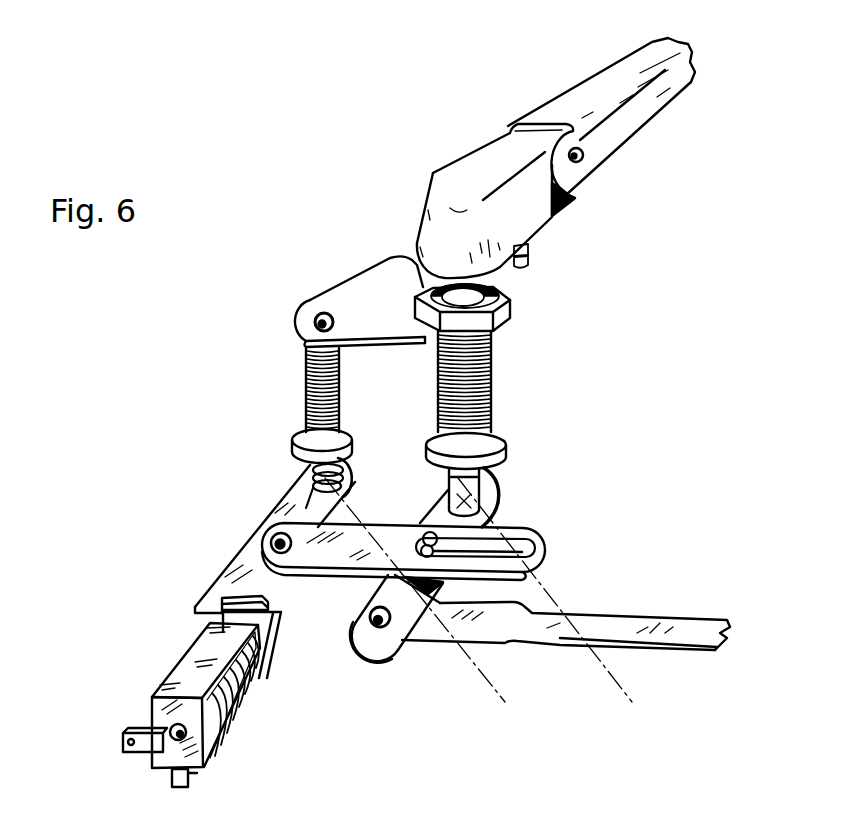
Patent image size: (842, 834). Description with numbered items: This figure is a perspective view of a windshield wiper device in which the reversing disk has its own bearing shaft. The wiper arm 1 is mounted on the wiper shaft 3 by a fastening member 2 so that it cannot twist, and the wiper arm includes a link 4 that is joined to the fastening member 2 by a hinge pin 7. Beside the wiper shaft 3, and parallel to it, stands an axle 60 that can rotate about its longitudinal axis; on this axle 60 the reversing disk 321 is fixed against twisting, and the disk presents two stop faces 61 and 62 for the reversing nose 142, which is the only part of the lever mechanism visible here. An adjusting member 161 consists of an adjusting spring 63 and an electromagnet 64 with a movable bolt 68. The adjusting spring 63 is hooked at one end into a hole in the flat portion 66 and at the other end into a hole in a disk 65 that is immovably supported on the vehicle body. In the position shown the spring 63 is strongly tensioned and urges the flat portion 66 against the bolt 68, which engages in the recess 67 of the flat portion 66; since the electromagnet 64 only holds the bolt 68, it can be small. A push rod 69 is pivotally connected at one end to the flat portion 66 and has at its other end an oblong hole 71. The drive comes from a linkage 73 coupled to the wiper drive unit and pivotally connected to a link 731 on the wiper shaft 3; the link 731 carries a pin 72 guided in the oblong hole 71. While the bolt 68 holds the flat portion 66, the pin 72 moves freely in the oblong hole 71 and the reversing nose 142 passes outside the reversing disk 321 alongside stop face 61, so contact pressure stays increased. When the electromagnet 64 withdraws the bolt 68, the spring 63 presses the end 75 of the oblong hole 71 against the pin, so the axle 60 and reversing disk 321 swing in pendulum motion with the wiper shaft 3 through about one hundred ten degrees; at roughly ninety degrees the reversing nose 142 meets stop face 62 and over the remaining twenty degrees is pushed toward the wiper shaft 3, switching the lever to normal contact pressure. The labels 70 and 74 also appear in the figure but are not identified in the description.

The wiper arm 1 is at (722, 78).
The fastening member 2 is at (473, 163).
The wiper shaft 3 is at (512, 294).
The link 4 is at (647, 110).
The hinge pin 7 is at (582, 160).
The reversing nose 142 is at (532, 252).
The bolt 74 is at (523, 265).
The stop face 61 is at (358, 275).
The reversing disk 321 is at (338, 300).
The stop face 62 is at (387, 347).
The axle 60 is at (318, 376).
The disk 65 is at (307, 458).
The adjusting spring 63 is at (305, 478).
The flat portion 66 is at (270, 505).
The adjusting member 161 is at (182, 536).
The push rod 69 is at (378, 523).
The pivot pin 70 is at (270, 543).
The oblong hole 71 is at (535, 532).
The end 75 is at (412, 533).
The pin 72 is at (496, 528).
The recess 67 is at (268, 589).
The bolt 68 is at (266, 633).
The electromagnet 64 is at (183, 677).
The link 731 is at (362, 655).
The linkage 73 is at (503, 628).